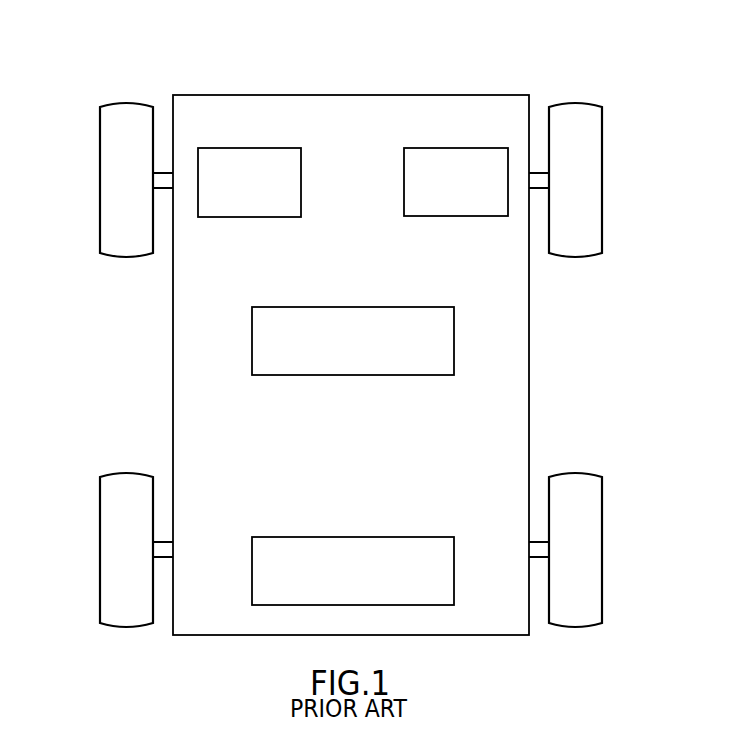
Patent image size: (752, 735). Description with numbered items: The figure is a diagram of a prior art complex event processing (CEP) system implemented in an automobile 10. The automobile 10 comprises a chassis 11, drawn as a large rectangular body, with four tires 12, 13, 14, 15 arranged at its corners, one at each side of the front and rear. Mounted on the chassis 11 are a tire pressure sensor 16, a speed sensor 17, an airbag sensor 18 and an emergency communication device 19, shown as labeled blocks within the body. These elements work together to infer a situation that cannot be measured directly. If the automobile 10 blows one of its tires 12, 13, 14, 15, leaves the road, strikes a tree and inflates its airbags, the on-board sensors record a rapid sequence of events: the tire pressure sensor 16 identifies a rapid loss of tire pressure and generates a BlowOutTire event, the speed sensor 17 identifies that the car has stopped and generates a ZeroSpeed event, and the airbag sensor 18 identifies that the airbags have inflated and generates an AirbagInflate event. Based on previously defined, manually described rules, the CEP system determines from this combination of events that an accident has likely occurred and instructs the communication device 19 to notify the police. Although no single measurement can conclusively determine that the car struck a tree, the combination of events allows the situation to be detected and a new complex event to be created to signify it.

The automobile 10 is at (164, 43).
The chassis 11 is at (397, 93).
The tire 12 is at (603, 162).
The tire 13 is at (603, 549).
The tire 14 is at (99, 549).
The tire 15 is at (99, 162).
The tire pressure sensor 16 is at (385, 535).
The speed sensor 17 is at (447, 147).
The airbag sensor 18 is at (243, 147).
The emergency communication device 19 is at (383, 305).